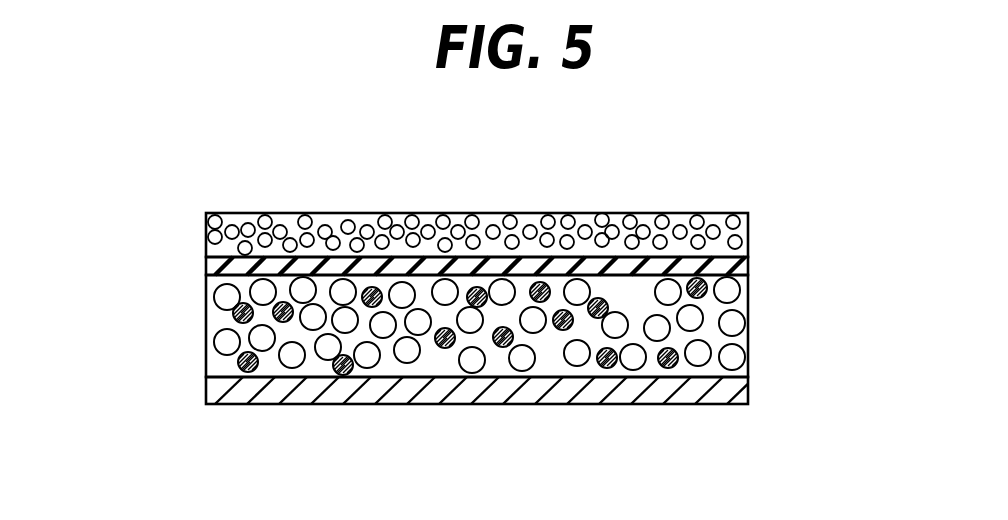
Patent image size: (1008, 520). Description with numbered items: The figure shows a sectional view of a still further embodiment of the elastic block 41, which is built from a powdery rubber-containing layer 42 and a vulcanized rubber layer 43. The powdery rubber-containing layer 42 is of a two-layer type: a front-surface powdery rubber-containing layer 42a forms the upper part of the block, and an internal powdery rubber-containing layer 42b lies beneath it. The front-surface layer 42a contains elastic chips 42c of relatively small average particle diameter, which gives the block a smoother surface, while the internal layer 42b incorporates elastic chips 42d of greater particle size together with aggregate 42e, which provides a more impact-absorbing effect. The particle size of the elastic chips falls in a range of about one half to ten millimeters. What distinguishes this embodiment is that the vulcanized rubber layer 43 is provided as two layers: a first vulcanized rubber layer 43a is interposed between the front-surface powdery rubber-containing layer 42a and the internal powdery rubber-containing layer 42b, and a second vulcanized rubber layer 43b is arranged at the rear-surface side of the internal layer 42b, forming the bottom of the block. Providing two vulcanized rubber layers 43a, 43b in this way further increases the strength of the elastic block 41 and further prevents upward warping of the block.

The elastic block 41 is at (487, 272).
The powdery rubber-containing layer 42 is at (564, 304).
The front-surface powdery rubber-containing layer 42a is at (528, 208).
The internal powdery rubber-containing layer 42b is at (528, 304).
The elastic chips 42c is at (612, 232).
The elastic chips 42d is at (634, 358).
The aggregate 42e is at (372, 297).
The vulcanized rubber layer 43 is at (403, 323).
The first vulcanized rubber layer 43a is at (207, 263).
The second vulcanized rubber layer 43b is at (207, 390).